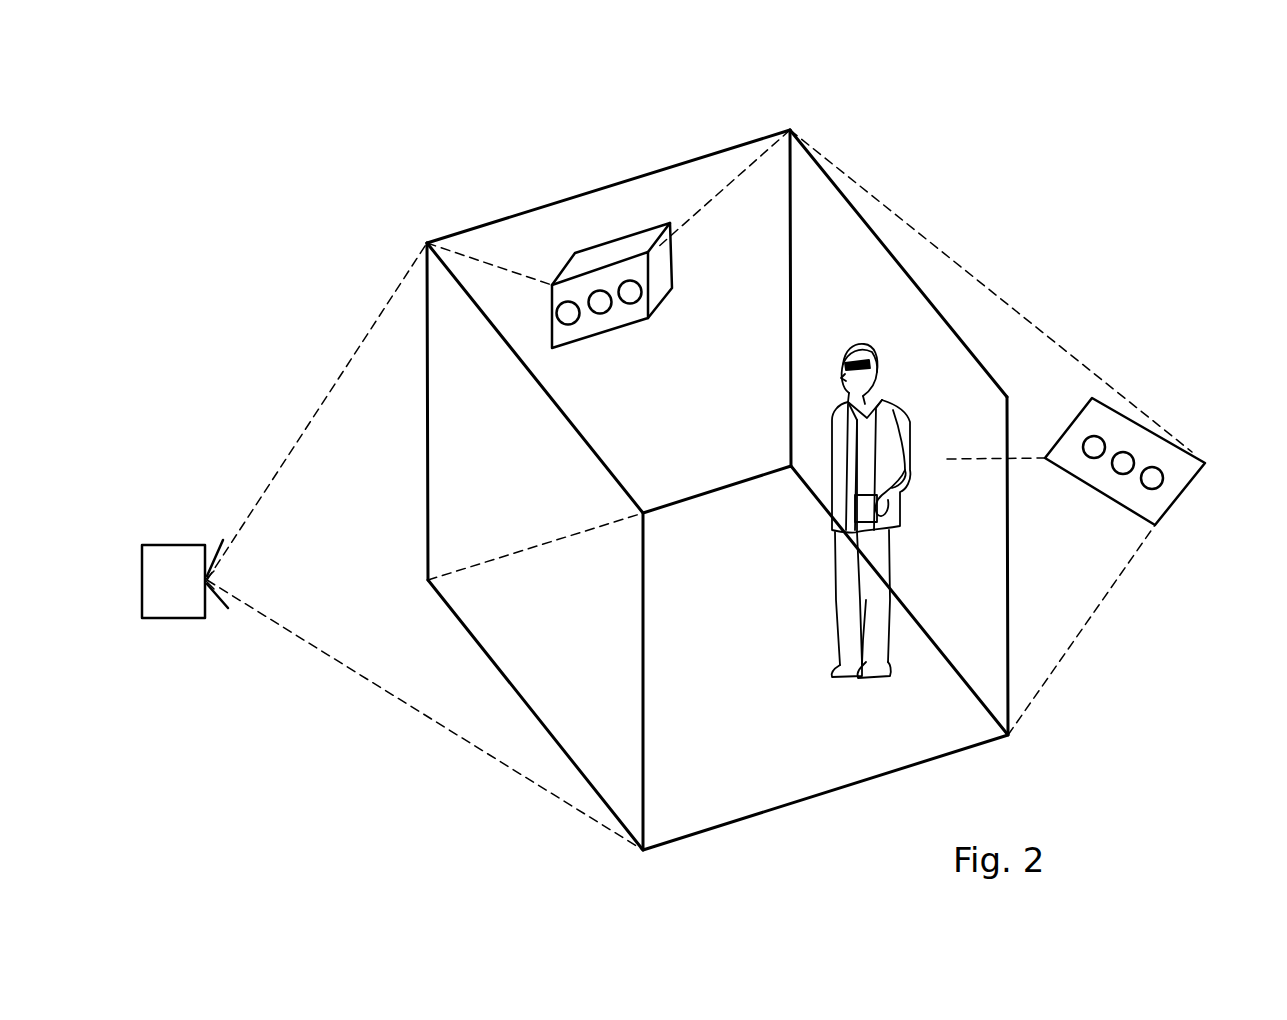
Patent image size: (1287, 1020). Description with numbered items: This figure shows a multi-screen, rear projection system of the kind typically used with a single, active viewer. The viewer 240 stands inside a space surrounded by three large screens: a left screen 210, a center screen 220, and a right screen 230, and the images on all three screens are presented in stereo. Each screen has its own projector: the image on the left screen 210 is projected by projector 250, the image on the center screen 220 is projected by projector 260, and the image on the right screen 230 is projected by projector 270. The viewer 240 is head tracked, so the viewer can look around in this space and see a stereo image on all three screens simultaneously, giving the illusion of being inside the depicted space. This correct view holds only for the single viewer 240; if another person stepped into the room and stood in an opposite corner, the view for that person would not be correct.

The left screen 210 is at (691, 490).
The center screen 220 is at (525, 232).
The right screen 230 is at (837, 225).
The viewer 240 is at (872, 347).
The projector 250 is at (181, 606).
The projector 260 is at (612, 262).
The projector 270 is at (1147, 452).